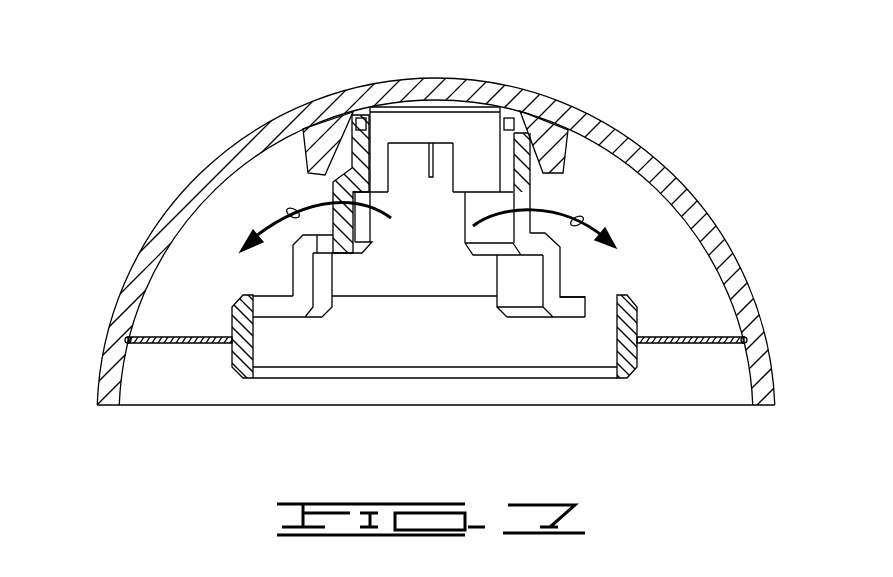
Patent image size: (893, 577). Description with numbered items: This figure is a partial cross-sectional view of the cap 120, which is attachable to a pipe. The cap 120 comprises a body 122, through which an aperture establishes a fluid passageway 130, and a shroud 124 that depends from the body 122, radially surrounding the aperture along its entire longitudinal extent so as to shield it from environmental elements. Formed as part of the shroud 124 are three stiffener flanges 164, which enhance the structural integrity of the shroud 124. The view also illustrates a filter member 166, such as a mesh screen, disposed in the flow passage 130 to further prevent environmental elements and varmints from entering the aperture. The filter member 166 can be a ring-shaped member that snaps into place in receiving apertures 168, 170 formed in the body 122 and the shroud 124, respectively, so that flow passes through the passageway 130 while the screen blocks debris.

The cap 120 is at (306, 62).
The body 122 is at (533, 195).
The shroud 124 is at (702, 218).
The fluid passageway 130 is at (287, 210).
The stiffener flanges 164 is at (431, 180).
The filter member 166 is at (180, 332).
The receiving aperture 168 is at (237, 338).
The receiving aperture 170 is at (126, 339).